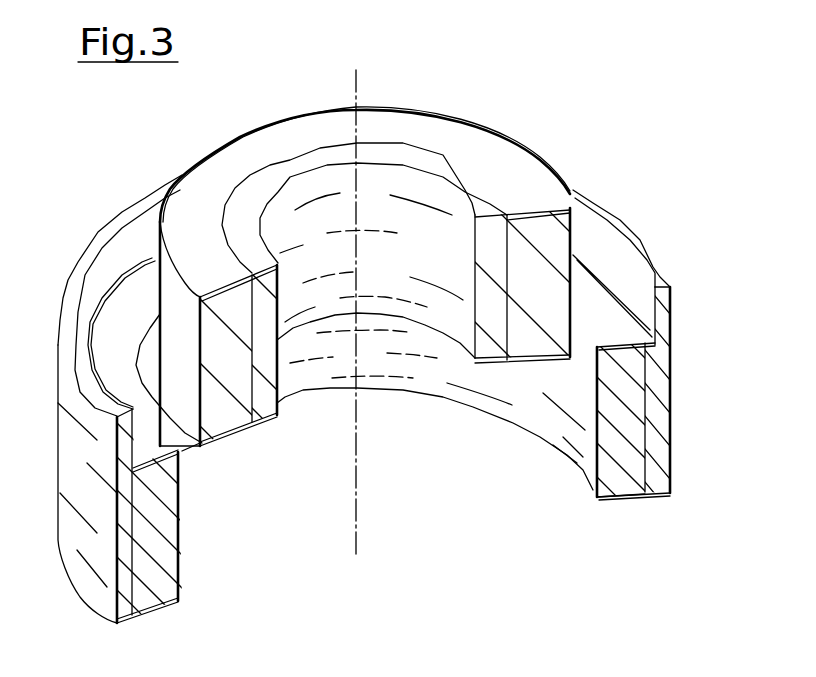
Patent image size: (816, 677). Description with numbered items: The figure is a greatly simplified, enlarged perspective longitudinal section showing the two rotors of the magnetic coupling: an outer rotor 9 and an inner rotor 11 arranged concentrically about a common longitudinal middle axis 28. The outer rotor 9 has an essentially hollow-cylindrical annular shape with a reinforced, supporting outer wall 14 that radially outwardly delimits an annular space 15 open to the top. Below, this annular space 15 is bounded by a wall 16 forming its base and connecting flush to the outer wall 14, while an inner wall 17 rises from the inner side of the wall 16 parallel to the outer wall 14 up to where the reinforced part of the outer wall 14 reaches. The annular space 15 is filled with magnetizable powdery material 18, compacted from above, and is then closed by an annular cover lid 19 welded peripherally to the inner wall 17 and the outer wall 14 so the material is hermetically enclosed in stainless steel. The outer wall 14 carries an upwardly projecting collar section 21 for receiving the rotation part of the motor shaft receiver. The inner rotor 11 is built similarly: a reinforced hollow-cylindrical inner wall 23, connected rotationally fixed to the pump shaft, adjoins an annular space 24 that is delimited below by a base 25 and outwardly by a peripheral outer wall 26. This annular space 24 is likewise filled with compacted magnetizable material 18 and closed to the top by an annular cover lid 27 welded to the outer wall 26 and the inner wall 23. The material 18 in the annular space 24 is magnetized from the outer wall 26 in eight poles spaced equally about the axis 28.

The outer rotor 9 is at (553, 468).
The inner rotor 11 is at (540, 139).
The outer wall 14 is at (665, 440).
The annular space 15 is at (632, 413).
The wall 16 is at (621, 497).
The inner wall 17 is at (599, 467).
The magnetizable powdery material 18 is at (545, 348).
The annular cover lid 19 is at (620, 332).
The collar section 21 is at (650, 262).
The inner wall 23 is at (450, 260).
The annular space 24 is at (231, 298).
The base 25 is at (240, 430).
The outer wall 26 is at (573, 252).
The annular cover lid 27 is at (410, 130).
The longitudinal middle axis 28 is at (357, 500).